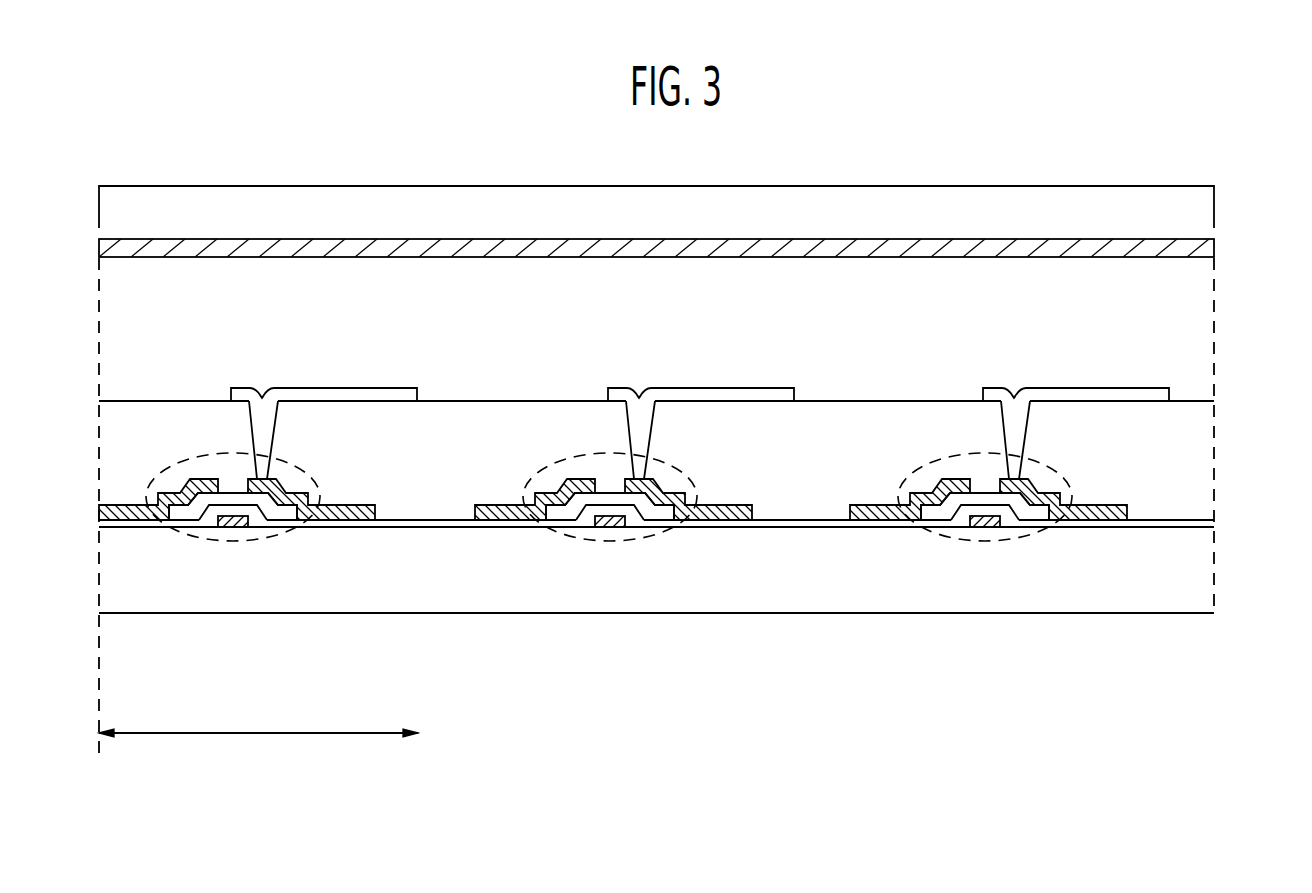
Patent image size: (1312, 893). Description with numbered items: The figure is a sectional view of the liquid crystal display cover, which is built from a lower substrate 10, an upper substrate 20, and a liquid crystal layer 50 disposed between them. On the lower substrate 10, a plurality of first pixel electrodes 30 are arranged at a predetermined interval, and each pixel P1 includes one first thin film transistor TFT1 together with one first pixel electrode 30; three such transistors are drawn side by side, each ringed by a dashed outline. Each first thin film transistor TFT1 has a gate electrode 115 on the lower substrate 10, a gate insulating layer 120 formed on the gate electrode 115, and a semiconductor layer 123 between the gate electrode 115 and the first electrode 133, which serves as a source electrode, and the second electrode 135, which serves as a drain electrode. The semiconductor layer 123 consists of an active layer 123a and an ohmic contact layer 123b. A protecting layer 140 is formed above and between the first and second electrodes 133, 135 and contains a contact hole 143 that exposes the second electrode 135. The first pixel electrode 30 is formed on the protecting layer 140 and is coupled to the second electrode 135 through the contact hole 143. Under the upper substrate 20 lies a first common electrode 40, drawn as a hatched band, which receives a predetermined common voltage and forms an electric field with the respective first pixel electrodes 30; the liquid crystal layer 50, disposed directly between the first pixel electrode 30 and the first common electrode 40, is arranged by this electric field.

The lower substrate 10 is at (1198, 577).
The upper substrate 20 is at (1205, 216).
The first pixel electrode 30 is at (395, 389).
The first common electrode 40 is at (1214, 250).
The liquid crystal layer 50 is at (1205, 348).
The gate electrode 115 is at (236, 528).
The gate insulating layer 120 is at (382, 528).
The semiconductor layer 123 is at (241, 693).
The active layer 123a is at (180, 512).
The ohmic contact layer 123b is at (198, 508).
The first electrode 133 is at (210, 478).
The second electrode 135 is at (287, 480).
The protecting layer 140 is at (107, 424).
The contact hole 143 is at (286, 429).
The first thin film transistor TFT1 is at (173, 467).
The pixel P1 is at (258, 749).